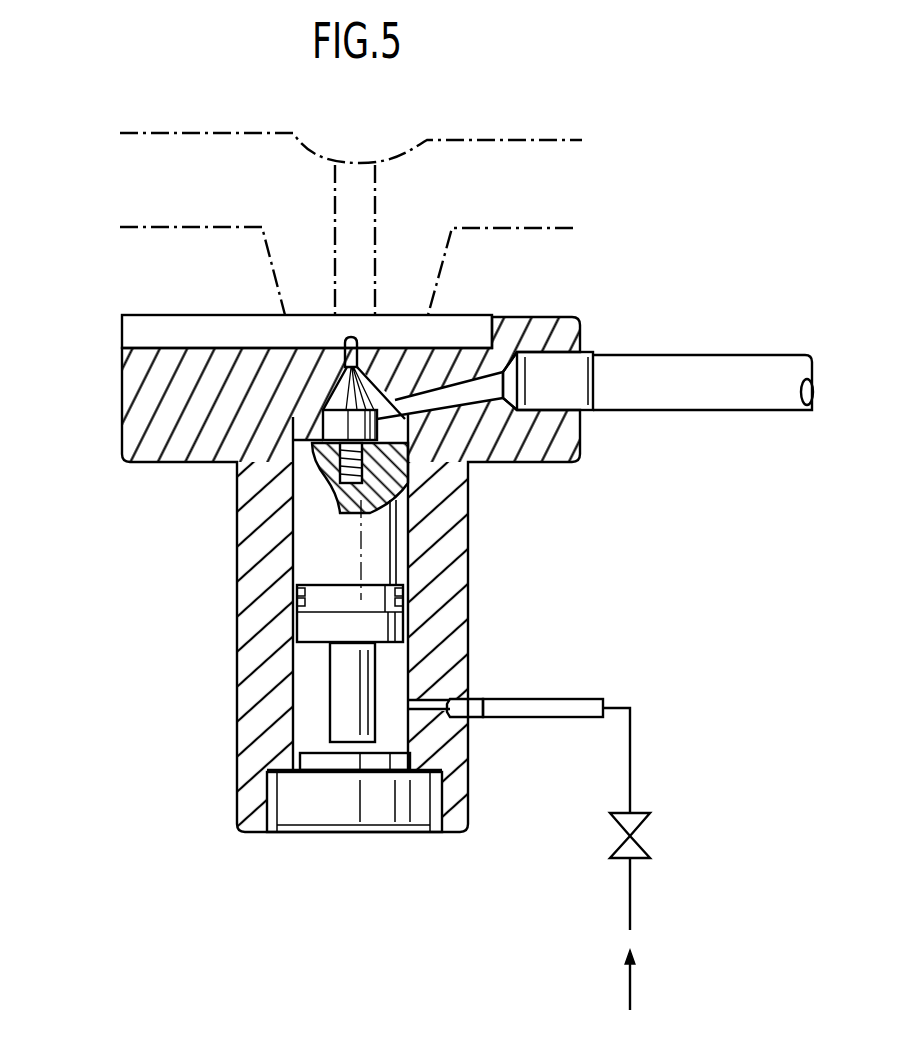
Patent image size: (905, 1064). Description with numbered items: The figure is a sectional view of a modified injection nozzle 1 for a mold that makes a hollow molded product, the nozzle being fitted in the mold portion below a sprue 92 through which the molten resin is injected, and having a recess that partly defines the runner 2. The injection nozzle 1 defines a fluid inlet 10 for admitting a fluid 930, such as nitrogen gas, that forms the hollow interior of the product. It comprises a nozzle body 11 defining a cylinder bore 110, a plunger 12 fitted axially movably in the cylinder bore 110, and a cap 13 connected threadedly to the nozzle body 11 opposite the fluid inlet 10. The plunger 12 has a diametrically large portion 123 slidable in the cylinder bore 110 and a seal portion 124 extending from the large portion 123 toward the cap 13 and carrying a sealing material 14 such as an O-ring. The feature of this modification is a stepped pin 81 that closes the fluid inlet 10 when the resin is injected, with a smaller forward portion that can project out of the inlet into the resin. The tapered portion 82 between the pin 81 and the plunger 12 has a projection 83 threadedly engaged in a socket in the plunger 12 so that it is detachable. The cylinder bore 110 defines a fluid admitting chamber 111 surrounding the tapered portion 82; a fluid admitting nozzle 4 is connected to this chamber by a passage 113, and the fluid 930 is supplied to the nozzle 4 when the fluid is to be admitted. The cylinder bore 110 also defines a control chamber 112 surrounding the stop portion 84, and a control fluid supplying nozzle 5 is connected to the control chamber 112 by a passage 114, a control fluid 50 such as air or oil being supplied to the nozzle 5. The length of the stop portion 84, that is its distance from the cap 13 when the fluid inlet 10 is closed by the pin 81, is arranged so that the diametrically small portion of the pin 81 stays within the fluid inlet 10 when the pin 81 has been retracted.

The injection nozzle 1 is at (566, 304).
The runner 2 is at (200, 313).
The fluid admitting nozzle 4 is at (653, 365).
The control fluid supplying nozzle 5 is at (567, 708).
The fluid inlet 10 is at (368, 367).
The nozzle body 11 is at (450, 578).
The plunger 12 is at (413, 511).
The cap 13 is at (340, 807).
The sealing material 14 is at (297, 592).
The control fluid 50 is at (628, 1003).
The pin 81 is at (345, 358).
The tapered portion 82 is at (337, 427).
The projection 83 is at (305, 463).
The stop portion 84 is at (340, 704).
The sprue 92 is at (372, 232).
The cylinder bore 110 is at (302, 484).
The fluid admitting chamber 111 is at (465, 432).
The control chamber 112 is at (390, 742).
The passage 113 is at (497, 350).
The passage 114 is at (420, 707).
The large portion 123 is at (313, 540).
The seal portion 124 is at (297, 607).
The fluid 930 is at (858, 382).